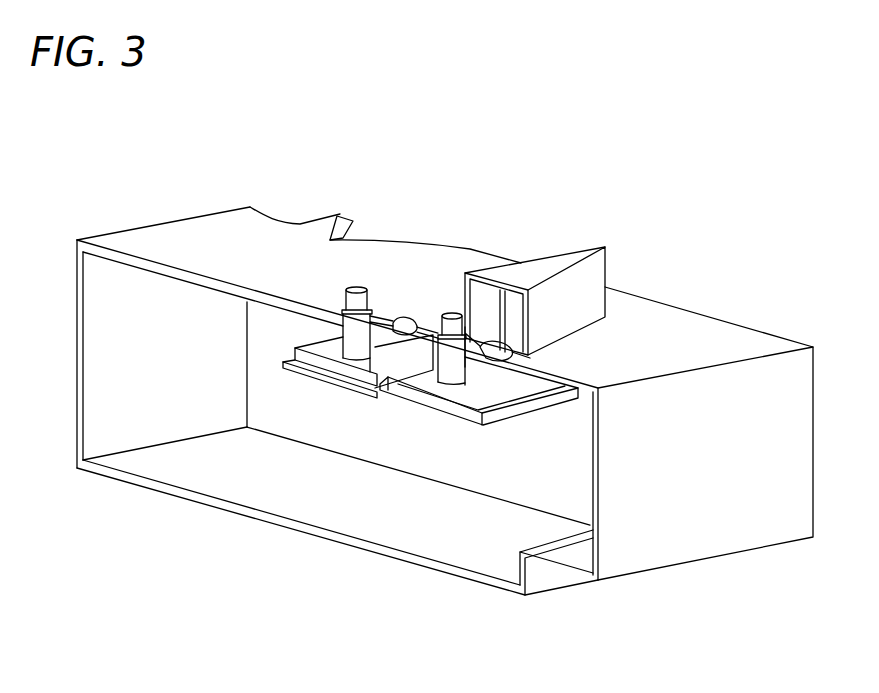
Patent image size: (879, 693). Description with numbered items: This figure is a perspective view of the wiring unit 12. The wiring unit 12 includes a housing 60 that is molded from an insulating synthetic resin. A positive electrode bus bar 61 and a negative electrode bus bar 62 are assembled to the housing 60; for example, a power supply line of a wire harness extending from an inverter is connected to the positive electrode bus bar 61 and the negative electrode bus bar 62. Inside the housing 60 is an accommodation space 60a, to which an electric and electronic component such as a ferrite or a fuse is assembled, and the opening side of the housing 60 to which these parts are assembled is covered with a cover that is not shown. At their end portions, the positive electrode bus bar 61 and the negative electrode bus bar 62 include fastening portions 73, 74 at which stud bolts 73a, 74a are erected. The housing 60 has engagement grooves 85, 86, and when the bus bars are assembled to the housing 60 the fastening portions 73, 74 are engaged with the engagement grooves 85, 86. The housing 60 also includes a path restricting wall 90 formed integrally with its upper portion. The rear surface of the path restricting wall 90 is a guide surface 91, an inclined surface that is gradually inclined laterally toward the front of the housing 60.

The wiring unit 12 is at (447, 571).
The housing 60 is at (748, 321).
The accommodation space 60a is at (240, 471).
The positive electrode bus bar 61 is at (334, 331).
The negative electrode bus bar 62 is at (497, 392).
The fastening portion 73 is at (338, 350).
The stud bolt 73a is at (360, 332).
The fastening portion 74 is at (423, 378).
The stud bolt 74a is at (461, 367).
The engagement groove 85 is at (398, 322).
The engagement groove 86 is at (488, 344).
The path restricting wall 90 is at (541, 270).
The guide surface 91 is at (588, 282).